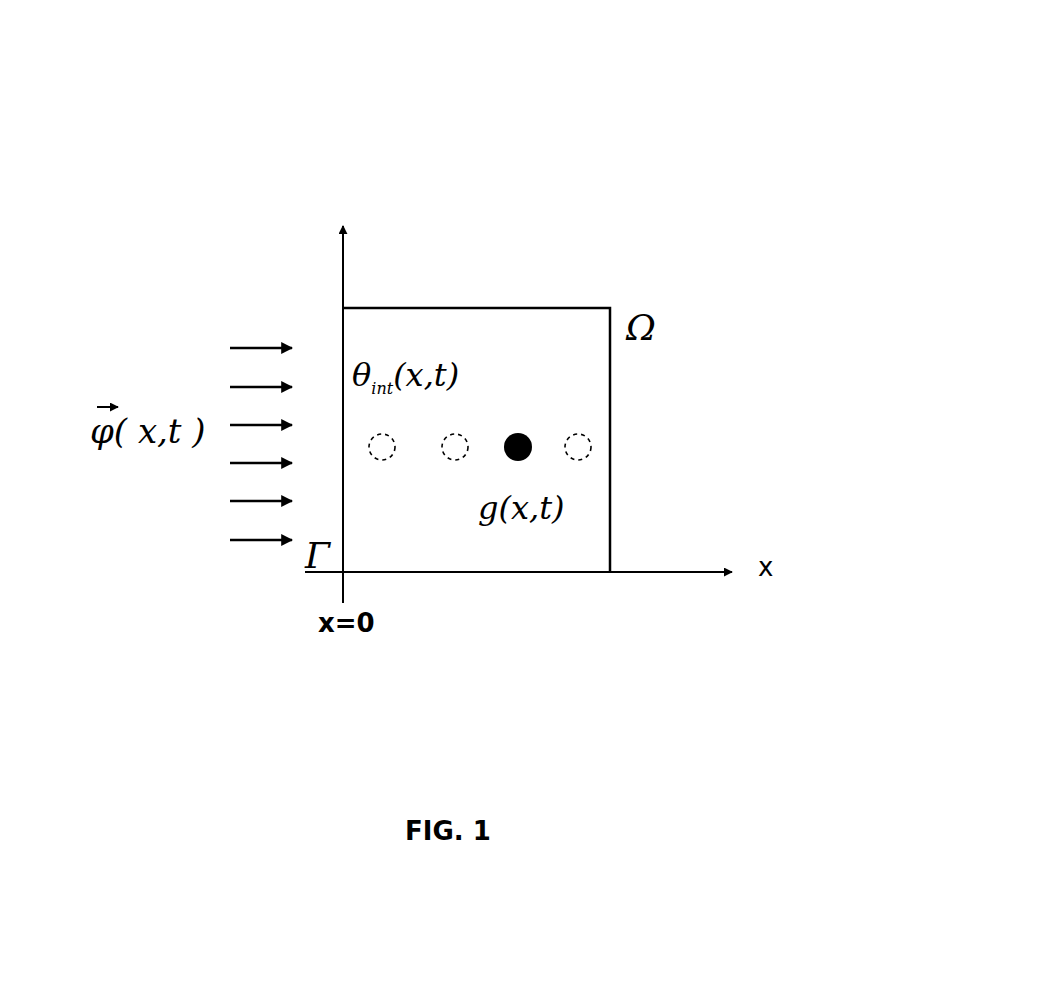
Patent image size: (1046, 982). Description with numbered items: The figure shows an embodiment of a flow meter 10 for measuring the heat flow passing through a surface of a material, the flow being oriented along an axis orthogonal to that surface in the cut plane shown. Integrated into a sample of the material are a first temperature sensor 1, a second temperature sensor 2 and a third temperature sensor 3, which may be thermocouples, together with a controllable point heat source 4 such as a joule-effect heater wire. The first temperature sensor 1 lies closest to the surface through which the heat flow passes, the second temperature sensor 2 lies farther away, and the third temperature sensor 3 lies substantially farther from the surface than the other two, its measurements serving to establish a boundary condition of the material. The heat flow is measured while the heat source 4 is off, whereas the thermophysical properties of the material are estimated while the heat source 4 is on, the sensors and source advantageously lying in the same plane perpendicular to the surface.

The flow meter 10 is at (680, 164).
The first temperature sensor 1 is at (388, 468).
The second temperature sensor 2 is at (459, 468).
The third temperature sensor 3 is at (598, 454).
The controllable point heat source 4 is at (524, 428).